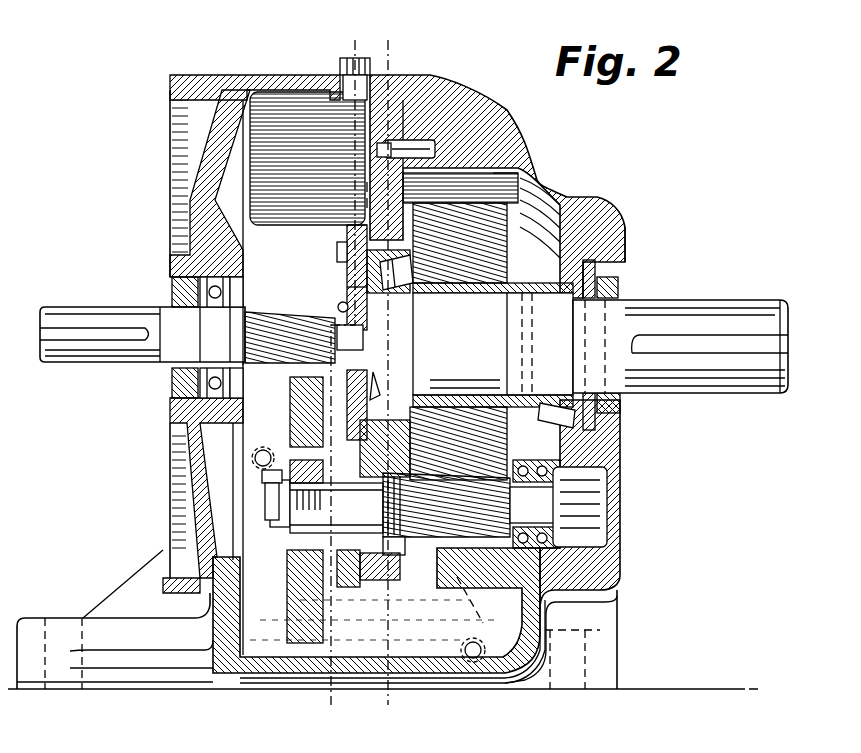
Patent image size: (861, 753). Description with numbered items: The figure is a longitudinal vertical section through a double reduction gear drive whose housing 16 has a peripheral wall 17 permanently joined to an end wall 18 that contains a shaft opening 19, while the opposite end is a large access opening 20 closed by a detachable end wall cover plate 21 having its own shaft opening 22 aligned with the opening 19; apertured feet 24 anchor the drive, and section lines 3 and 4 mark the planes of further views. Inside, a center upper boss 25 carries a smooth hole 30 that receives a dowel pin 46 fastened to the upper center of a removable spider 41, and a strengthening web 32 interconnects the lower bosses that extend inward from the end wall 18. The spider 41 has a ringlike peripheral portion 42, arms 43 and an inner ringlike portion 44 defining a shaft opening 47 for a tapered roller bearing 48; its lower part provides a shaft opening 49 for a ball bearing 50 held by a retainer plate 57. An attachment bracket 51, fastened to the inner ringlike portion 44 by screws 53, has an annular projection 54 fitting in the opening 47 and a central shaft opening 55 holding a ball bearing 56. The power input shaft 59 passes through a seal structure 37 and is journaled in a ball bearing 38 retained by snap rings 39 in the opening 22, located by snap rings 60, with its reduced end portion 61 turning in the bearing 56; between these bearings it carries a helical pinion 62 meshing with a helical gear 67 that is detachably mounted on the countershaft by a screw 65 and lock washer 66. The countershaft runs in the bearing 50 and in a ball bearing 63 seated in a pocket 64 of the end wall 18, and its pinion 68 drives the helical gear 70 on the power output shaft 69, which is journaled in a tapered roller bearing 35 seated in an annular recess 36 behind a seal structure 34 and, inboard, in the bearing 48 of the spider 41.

The section line 3- 3 is at (367, 33).
The section line 4- 4 is at (411, 33).
The housing 16 is at (302, 74).
The peripheral wall 17 is at (404, 86).
The end wall 18 is at (548, 193).
The shaft opening 19 is at (612, 272).
The access opening 20 is at (293, 181).
The end wall cover plate 21 is at (172, 211).
The shaft opening 22 is at (190, 277).
The apertured feet 24 is at (606, 628).
The upper boss 25 is at (493, 173).
The hole 30 is at (410, 147).
The strengthening web 32 is at (437, 577).
The seal structure 34 is at (626, 287).
The antifriction bearing unit 35 is at (603, 256).
The annular recess 36 is at (583, 447).
The seal structure 37 is at (168, 381).
The antifriction bearing unit 38 is at (236, 291).
The snap rings 39 is at (233, 265).
The spider 41 is at (368, 187).
The ringlike peripheral portion 42 is at (385, 162).
The arms 43 is at (367, 202).
The inner ringlike portion 44 is at (350, 230).
The dowel pin 46 is at (420, 133).
The shaft opening 47 is at (347, 272).
The antifriction bearing unit 48 is at (398, 292).
The shaft opening 49 is at (387, 568).
The antifriction bearing unit 50 is at (388, 541).
The attachment bracket 51 is at (347, 288).
The screws 53 is at (338, 252).
The annular projection 54 is at (334, 430).
The shaft opening 55 is at (373, 372).
The antifriction bearing unit 56 is at (338, 307).
The retainer plate 57 is at (347, 585).
The power input shaft 59 is at (100, 301).
The snap rings 60 is at (222, 362).
The reduced end portion 61 is at (350, 337).
The helical pinion 62 is at (293, 317).
The antifriction bearing unit 63 is at (560, 527).
The pocket 64 is at (543, 591).
The screw 65 is at (264, 522).
The lock washer 66 is at (277, 480).
The helical gear 67 is at (290, 385).
The pinion 68 is at (457, 537).
The power output shaft 69 is at (705, 312).
The helical gear 70 is at (457, 290).